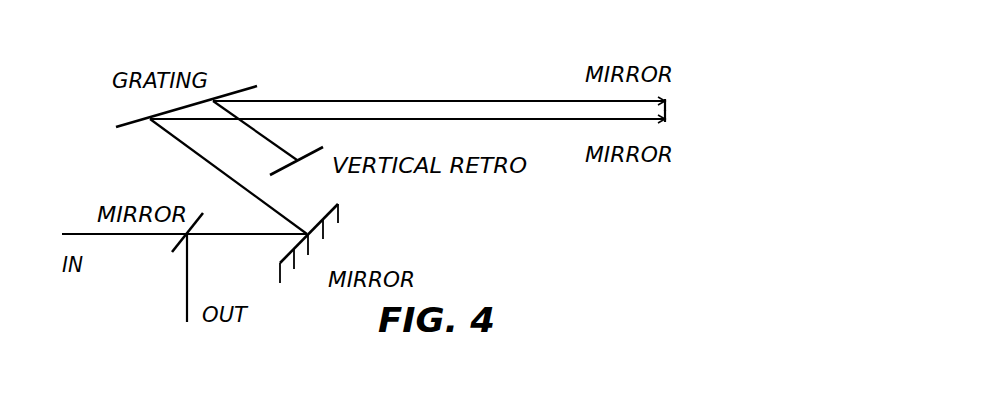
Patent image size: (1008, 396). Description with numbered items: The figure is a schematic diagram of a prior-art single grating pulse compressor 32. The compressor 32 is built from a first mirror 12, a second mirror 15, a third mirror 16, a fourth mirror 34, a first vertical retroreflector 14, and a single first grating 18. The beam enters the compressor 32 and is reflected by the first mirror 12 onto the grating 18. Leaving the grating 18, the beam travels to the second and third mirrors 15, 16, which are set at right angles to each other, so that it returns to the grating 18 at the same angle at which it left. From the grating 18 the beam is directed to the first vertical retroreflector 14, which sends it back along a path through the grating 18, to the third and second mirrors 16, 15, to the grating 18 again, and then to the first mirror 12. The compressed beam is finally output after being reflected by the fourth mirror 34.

The first mirror 12 is at (340, 210).
The first vertical retroreflector 14 is at (318, 148).
The second mirror 15 is at (663, 122).
The third mirror 16 is at (662, 100).
The first grating 18 is at (257, 86).
The single grating pulse compressor 32 is at (533, 72).
The fourth mirror 34 is at (173, 248).